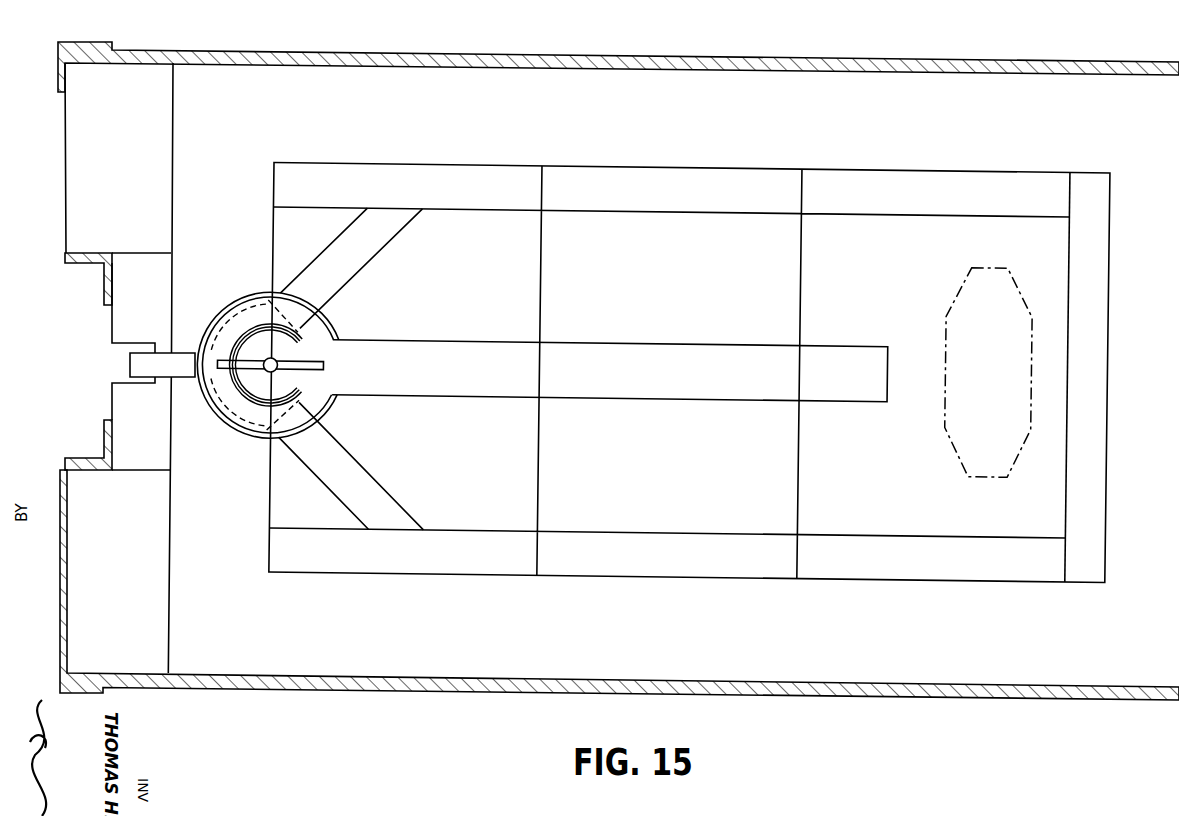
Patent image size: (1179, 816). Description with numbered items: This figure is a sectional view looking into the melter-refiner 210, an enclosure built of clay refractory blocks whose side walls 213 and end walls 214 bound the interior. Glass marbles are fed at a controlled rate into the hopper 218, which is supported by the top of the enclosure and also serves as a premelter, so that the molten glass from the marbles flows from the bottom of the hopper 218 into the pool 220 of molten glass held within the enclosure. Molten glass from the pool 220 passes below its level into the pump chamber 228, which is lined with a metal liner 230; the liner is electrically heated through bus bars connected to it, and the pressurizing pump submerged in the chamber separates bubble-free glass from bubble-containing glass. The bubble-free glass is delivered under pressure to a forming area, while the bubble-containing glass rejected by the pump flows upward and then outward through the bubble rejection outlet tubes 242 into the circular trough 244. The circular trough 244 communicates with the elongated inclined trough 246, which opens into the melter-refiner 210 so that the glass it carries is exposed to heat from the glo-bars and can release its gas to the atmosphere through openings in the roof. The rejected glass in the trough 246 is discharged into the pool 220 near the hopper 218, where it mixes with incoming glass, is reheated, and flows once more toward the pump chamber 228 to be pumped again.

The melter-refiner 210 is at (313, 38).
The side walls 213 is at (618, 131).
The end walls 214 is at (225, 547).
The hopper 218 is at (1026, 440).
The pool of molten glass 220 is at (668, 268).
The pump chamber 228 is at (248, 393).
The metal liner 230 is at (308, 343).
The bubble rejection outlet tubes 242 is at (221, 358).
The circular trough 244 is at (322, 397).
The elongated inclined trough 246 is at (626, 341).